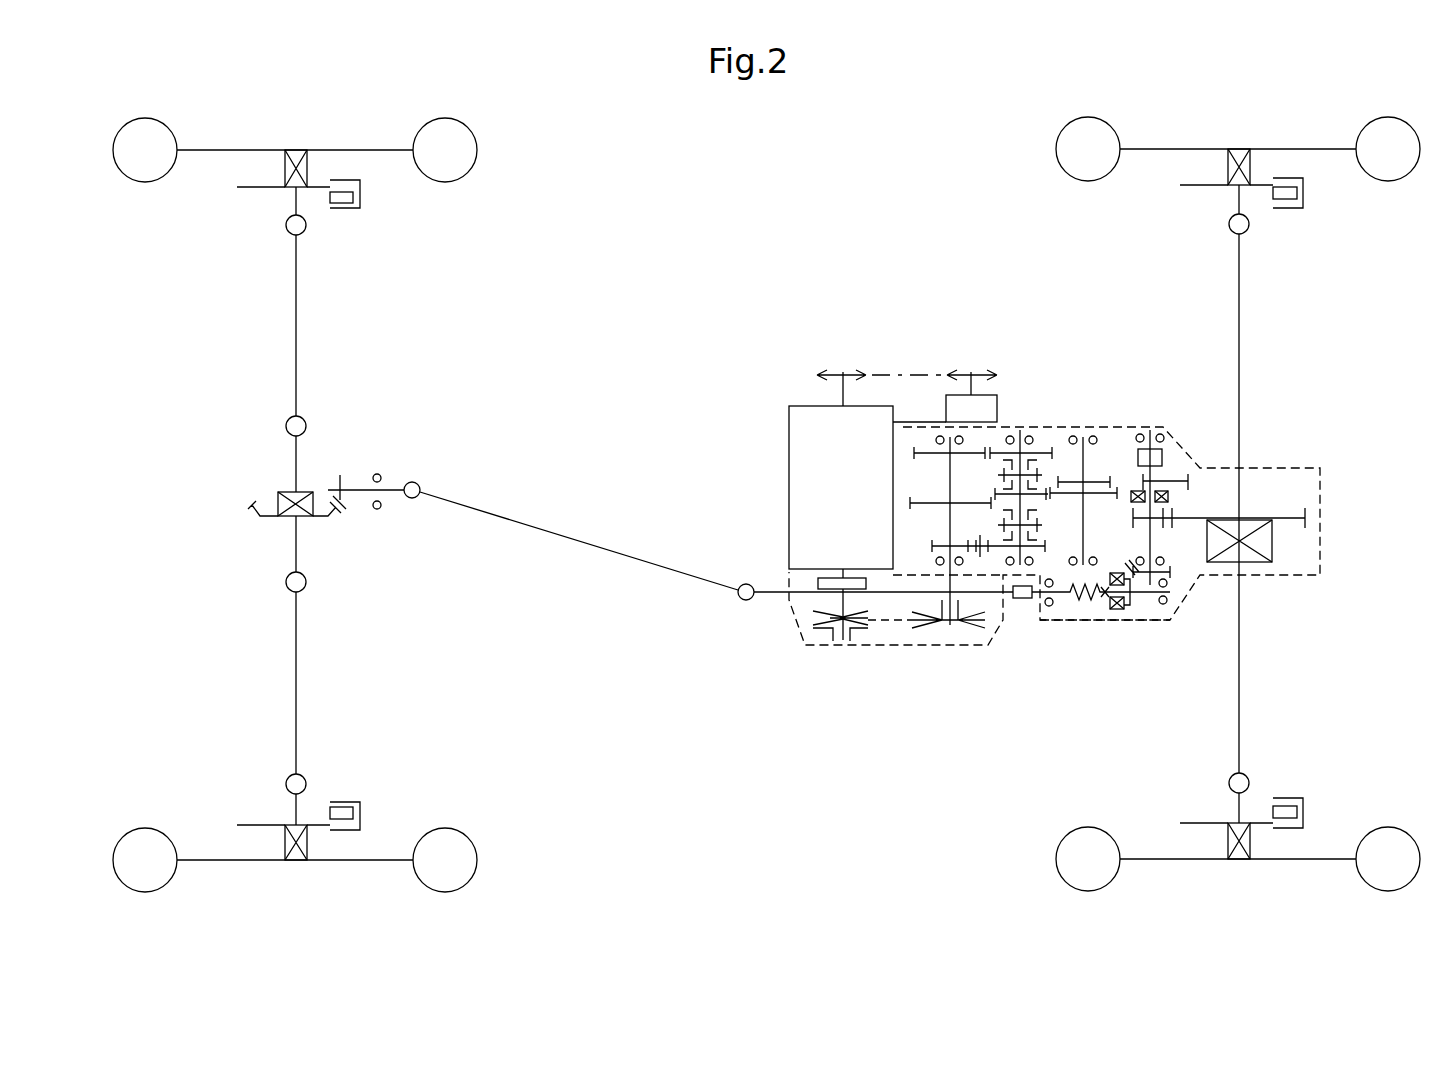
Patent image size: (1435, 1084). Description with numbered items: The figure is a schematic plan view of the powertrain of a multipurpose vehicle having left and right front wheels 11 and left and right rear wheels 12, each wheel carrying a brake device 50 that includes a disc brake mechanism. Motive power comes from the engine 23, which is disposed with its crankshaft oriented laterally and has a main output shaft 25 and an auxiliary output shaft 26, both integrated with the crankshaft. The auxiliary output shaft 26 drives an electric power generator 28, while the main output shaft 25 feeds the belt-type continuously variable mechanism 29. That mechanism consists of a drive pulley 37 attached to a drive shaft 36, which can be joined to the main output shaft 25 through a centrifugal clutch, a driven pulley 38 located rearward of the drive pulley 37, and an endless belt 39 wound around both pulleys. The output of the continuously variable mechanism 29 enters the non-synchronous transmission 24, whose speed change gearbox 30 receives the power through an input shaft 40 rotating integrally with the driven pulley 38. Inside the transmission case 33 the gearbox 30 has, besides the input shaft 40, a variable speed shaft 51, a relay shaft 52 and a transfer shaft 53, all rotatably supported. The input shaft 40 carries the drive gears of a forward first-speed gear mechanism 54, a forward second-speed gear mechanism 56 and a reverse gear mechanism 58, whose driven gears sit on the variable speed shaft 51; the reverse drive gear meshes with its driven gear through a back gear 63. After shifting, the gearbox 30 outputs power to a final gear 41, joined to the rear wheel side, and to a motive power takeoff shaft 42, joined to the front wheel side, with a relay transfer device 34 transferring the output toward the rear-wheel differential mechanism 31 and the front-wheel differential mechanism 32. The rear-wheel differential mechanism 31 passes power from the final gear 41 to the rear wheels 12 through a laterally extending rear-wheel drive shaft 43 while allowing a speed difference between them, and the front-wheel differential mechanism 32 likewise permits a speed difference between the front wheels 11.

The front wheels 11 is at (148, 126).
The rear wheels 12 is at (1393, 126).
The engine 23 is at (793, 440).
The transmission 24 is at (1095, 408).
The main output shaft 25 is at (820, 567).
The auxiliary output shaft 26 is at (838, 394).
The electric power generator 28 is at (997, 400).
The belt-type continuously variable mechanism 29 is at (827, 646).
The speed change gearbox 30 is at (1062, 431).
The rear-wheel differential mechanism 31 is at (1293, 498).
The front-wheel differential mechanism 32 is at (338, 465).
The transmission case 33 is at (1080, 625).
The relay transfer device 34 is at (1113, 440).
The drive shaft 36 is at (838, 640).
The drive pulley 37 is at (858, 640).
The driven pulley 38 is at (975, 630).
The endless belt 39 is at (888, 625).
The input shaft 40 is at (962, 640).
The final gear 41 is at (1158, 520).
The motive power takeoff shaft 42 is at (1068, 625).
The rear-wheel drive shaft 43 is at (1239, 328).
The brake device 50 is at (360, 197).
The variable speed shaft 51 is at (1022, 437).
The relay shaft 52 is at (1090, 507).
The transfer shaft 53 is at (1158, 440).
The forward first-speed gear mechanism 54 is at (892, 491).
The forward second-speed gear mechanism 56 is at (902, 442).
The reverse gear mechanism 58 is at (917, 539).
The back gear 63 is at (975, 528).